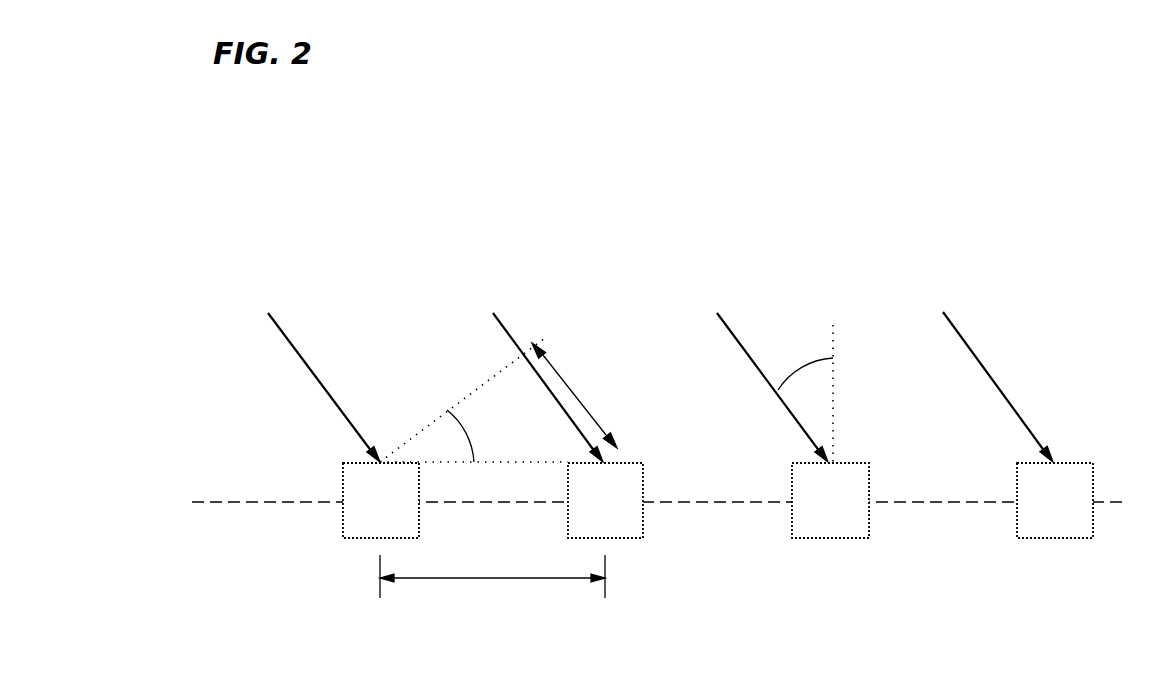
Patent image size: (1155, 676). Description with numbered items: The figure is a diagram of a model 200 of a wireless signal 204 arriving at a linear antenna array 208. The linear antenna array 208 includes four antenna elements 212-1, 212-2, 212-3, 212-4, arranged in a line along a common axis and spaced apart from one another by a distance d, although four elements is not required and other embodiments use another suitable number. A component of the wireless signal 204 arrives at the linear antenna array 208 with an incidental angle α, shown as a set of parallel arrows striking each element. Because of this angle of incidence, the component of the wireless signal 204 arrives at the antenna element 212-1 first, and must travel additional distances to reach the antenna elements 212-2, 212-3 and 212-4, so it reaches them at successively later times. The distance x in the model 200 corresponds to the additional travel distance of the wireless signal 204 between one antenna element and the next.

The model 200 is at (812, 176).
The wireless signal 204 is at (283, 330).
The linear antenna array 208 is at (925, 627).
The antenna element 212-1 is at (381, 500).
The antenna element 212-2 is at (605, 500).
The antenna element 212-3 is at (830, 500).
The antenna element 212-4 is at (1055, 500).